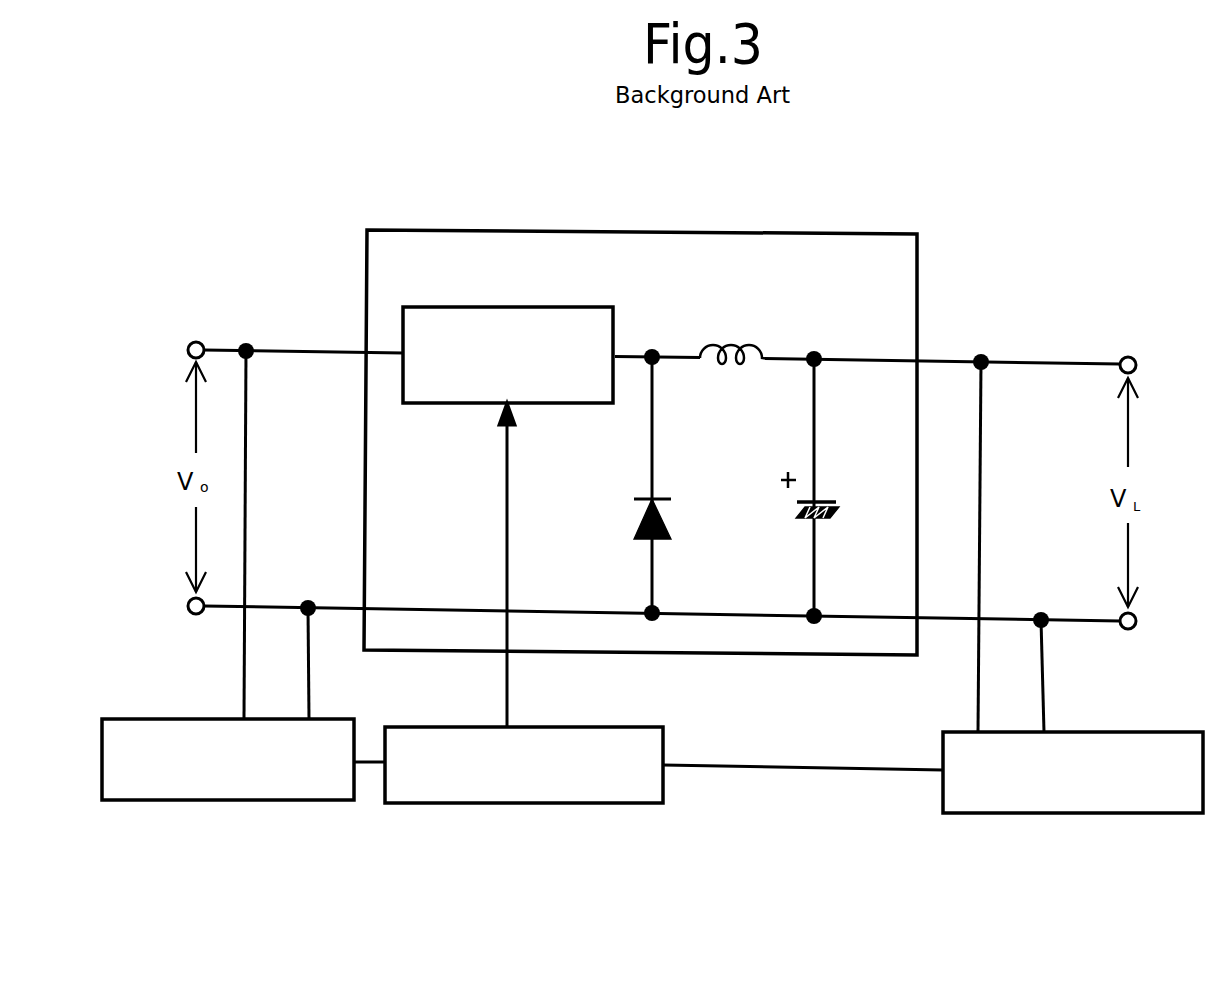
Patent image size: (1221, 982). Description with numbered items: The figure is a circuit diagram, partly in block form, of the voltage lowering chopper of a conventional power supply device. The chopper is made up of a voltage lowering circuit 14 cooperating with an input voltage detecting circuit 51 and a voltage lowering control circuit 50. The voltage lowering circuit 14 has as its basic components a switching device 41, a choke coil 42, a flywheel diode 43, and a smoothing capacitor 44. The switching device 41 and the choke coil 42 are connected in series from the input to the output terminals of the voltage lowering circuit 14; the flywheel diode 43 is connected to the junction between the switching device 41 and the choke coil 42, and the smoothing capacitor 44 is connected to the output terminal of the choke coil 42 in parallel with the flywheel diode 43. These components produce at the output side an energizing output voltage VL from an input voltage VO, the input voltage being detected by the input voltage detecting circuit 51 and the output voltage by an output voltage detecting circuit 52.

The voltage lowering circuit 14 is at (840, 234).
The switching device 41 is at (555, 405).
The choke coil 42 is at (743, 343).
The flywheel diode 43 is at (667, 498).
The smoothing capacitor 44 is at (823, 498).
The voltage lowering control circuit 50 is at (623, 727).
The input voltage detecting circuit 51 is at (338, 720).
The output voltage detecting circuit 52 is at (1072, 732).